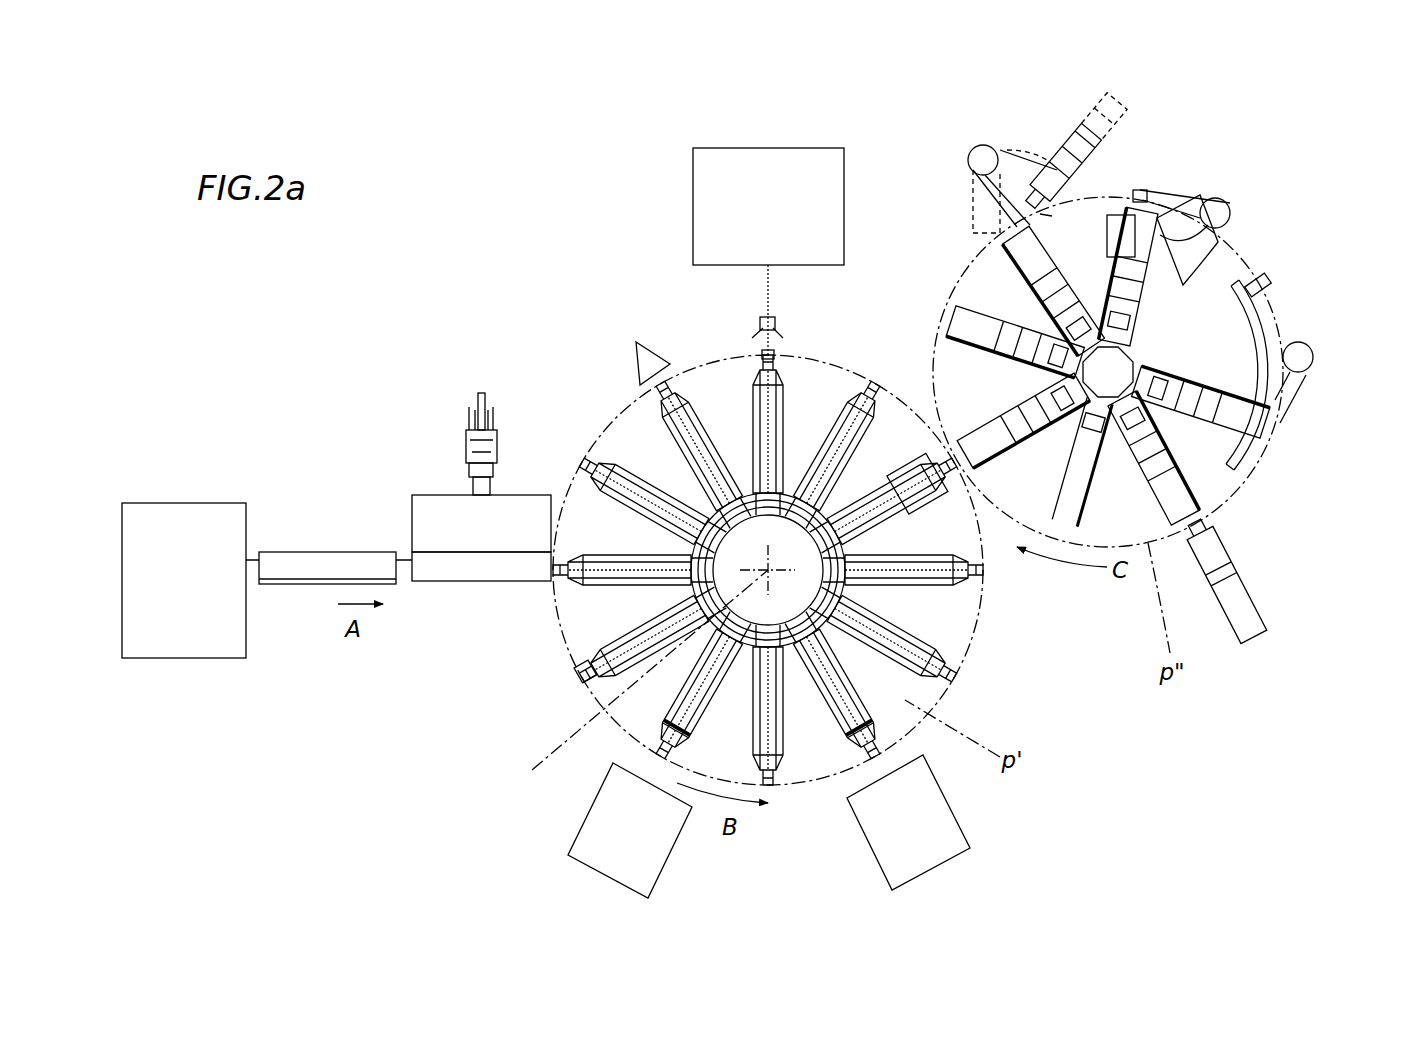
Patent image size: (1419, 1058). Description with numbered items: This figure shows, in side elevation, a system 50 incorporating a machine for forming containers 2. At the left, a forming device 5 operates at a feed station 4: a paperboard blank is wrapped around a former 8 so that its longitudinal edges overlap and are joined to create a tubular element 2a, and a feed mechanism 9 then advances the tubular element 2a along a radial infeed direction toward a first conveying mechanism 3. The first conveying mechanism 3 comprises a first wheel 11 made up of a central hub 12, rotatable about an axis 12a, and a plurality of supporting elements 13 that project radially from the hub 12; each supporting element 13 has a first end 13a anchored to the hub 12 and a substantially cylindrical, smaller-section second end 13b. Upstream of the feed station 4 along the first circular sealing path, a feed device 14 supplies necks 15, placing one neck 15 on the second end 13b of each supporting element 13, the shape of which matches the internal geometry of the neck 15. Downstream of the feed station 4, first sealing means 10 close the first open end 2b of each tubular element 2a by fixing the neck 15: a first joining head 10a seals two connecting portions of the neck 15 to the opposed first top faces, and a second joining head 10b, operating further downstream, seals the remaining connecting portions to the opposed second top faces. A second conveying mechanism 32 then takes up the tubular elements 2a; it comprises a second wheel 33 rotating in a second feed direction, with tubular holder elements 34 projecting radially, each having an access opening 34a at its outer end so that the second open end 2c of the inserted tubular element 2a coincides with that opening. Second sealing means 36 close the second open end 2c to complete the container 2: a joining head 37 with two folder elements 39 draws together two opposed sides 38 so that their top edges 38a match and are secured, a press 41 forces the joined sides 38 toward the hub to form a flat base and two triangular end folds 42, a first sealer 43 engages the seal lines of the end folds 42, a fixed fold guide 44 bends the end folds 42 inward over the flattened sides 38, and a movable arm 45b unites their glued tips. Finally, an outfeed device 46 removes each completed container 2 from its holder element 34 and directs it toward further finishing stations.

The container 2 is at (1255, 640).
The tubular element 2a is at (550, 553).
The first open end 2b is at (435, 552).
The second open end 2c is at (470, 447).
The first conveying mechanism 3 is at (830, 407).
The feed station 4 is at (707, 397).
The forming device 5 is at (184, 580).
The former 8 is at (277, 552).
The feed mechanism 9 is at (488, 440).
The first sealing means 10 is at (765, 826).
The first joining head 10a is at (630, 830).
The second joining head 10b is at (908, 822).
The first wheel 11 is at (780, 627).
The central hub 12 is at (770, 608).
The axis 12a is at (626, 676).
The supporting element 13 is at (610, 460).
The first end 13a is at (767, 463).
The second end 13b is at (857, 395).
The feed device 14 is at (640, 347).
The neck 15 is at (760, 322).
The second conveying mechanism 32 is at (1278, 435).
The second wheel 33 is at (1185, 475).
The holder element 34 is at (985, 323).
The access opening 34a is at (957, 327).
The second sealing means 36 is at (930, 390).
The joining head 37 is at (1032, 153).
The side 38 is at (1012, 217).
The top edge 38a is at (1163, 197).
The folder element 39 is at (977, 186).
The press 41 is at (1210, 188).
The end fold 42 is at (1230, 207).
The first sealer 43 is at (1272, 277).
The fixed fold guide 44 is at (1272, 320).
The movable arm 45b is at (1297, 390).
The outfeed device 46 is at (1200, 502).
The system 50 is at (1080, 137).